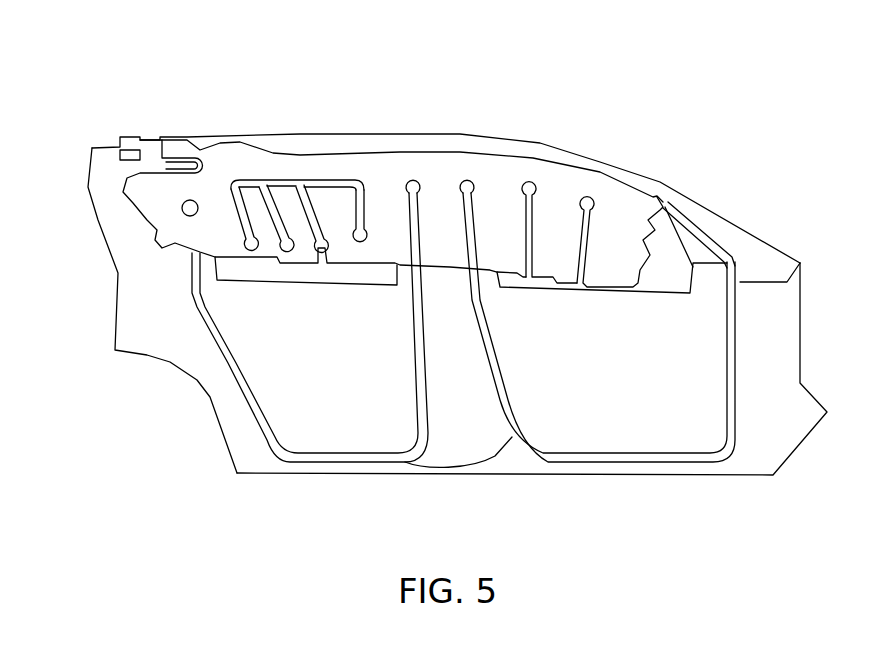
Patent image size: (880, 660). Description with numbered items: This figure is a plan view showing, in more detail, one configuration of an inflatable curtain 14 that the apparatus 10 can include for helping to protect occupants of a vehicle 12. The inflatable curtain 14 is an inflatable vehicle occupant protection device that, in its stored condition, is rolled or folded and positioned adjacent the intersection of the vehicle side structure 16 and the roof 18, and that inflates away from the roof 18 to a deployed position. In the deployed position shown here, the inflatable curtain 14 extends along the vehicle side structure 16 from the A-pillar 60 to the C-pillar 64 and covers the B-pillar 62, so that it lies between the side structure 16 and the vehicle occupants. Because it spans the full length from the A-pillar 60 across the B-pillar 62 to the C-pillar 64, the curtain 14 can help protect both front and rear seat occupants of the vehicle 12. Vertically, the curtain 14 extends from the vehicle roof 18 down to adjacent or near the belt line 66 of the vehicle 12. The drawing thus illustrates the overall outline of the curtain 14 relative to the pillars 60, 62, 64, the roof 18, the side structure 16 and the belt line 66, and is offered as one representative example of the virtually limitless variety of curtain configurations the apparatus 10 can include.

The apparatus 10 is at (132, 89).
The vehicle 12 is at (715, 151).
The inflatable curtain 14 is at (380, 247).
The side structure 16 is at (530, 460).
The roof 18 is at (422, 133).
The A-pillar 60 is at (737, 238).
The B-pillar 62 is at (453, 287).
The C-pillar 64 is at (127, 237).
The belt line 66 is at (280, 287).